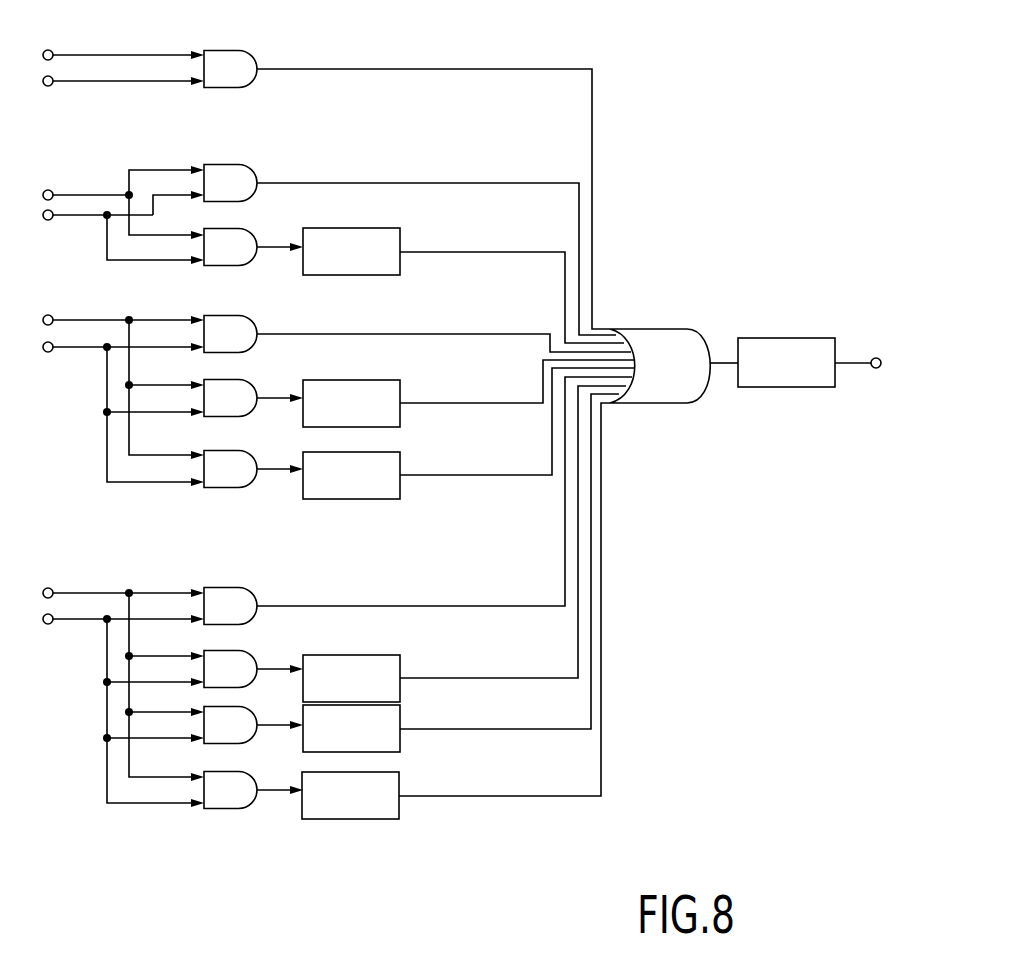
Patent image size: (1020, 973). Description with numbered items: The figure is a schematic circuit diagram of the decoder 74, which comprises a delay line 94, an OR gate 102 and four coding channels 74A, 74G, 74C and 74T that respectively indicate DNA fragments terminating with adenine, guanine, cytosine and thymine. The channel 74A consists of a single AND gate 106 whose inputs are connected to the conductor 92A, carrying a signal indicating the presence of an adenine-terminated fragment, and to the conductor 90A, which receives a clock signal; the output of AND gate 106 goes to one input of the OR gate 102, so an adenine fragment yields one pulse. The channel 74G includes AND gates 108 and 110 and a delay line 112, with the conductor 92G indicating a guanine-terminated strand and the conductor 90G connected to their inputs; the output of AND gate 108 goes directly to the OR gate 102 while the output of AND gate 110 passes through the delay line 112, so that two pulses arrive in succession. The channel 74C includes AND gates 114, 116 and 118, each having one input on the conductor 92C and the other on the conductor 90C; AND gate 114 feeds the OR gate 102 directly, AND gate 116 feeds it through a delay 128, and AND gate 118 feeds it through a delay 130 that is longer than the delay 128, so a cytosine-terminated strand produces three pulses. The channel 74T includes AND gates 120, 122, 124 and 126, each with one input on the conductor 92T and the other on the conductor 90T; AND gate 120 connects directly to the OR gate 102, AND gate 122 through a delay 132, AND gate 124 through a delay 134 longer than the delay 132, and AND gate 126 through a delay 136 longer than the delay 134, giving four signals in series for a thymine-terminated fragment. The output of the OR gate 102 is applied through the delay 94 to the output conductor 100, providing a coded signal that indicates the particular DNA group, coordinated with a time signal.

The decoder 74 is at (744, 196).
The coding channel 74A is at (233, 49).
The coding channel 74G is at (233, 164).
The coding channel 74C is at (270, 314).
The coding channel 74T is at (272, 581).
The conductor 92A is at (124, 54).
The conductor 90A is at (124, 82).
The conductor 92G is at (92, 191).
The conductor 90G is at (90, 233).
The conductor 92C is at (92, 320).
The conductor 90C is at (68, 349).
The conductor 92T is at (92, 593).
The conductor 90T is at (65, 622).
The AND gate 106 is at (258, 78).
The AND gate 108 is at (257, 169).
The AND gate 110 is at (284, 237).
The delay line 112 is at (403, 236).
The AND gate 114 is at (222, 314).
The AND gate 116 is at (284, 390).
The AND gate 118 is at (284, 459).
The AND gate 120 is at (261, 595).
The AND gate 122 is at (283, 664).
The AND gate 124 is at (283, 711).
The AND gate 126 is at (283, 777).
The delay 128 is at (403, 388).
The delay 130 is at (403, 461).
The delay 132 is at (403, 666).
The delay 134 is at (403, 718).
The delay 136 is at (403, 781).
The OR gate 102 is at (651, 325).
The delay line 94 is at (786, 338).
The output conductor 100 is at (870, 343).